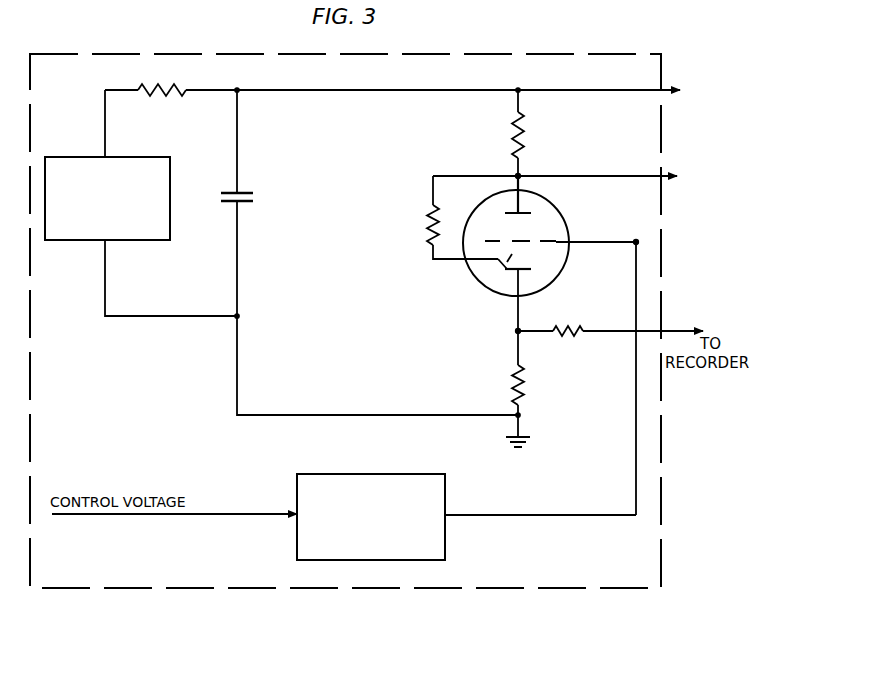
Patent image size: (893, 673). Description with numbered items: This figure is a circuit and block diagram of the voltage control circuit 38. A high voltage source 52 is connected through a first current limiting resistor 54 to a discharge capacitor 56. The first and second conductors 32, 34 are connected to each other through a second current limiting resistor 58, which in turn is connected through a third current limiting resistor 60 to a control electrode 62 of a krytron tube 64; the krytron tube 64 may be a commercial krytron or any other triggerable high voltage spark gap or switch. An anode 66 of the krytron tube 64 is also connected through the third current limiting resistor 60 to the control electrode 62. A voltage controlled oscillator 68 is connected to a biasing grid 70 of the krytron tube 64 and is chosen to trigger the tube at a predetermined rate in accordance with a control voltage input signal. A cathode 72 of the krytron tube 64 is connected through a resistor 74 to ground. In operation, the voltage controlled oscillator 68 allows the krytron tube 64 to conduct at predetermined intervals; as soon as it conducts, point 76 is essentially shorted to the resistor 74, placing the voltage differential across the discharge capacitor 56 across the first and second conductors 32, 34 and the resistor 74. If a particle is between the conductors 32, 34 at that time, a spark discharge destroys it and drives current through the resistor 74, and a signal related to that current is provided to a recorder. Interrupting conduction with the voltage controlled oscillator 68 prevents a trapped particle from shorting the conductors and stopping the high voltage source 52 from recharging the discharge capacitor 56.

The first conductor 32 is at (723, 108).
The second conductor 34 is at (726, 215).
The voltage control circuit 38 is at (598, 54).
The high voltage source 52 is at (70, 241).
The first current limiting resistor 54 is at (162, 97).
The discharge capacitor 56 is at (258, 198).
The second current limiting resistor 58 is at (526, 131).
The third current limiting resistor 60 is at (422, 233).
The control electrode 62 is at (506, 264).
The krytron tube 64 is at (541, 189).
The anode 66 is at (521, 216).
The voltage controlled oscillator 68 is at (388, 473).
The biasing grid 70 is at (547, 249).
The cathode 72 is at (560, 291).
The resistor 74 is at (525, 372).
The point 76 is at (522, 175).